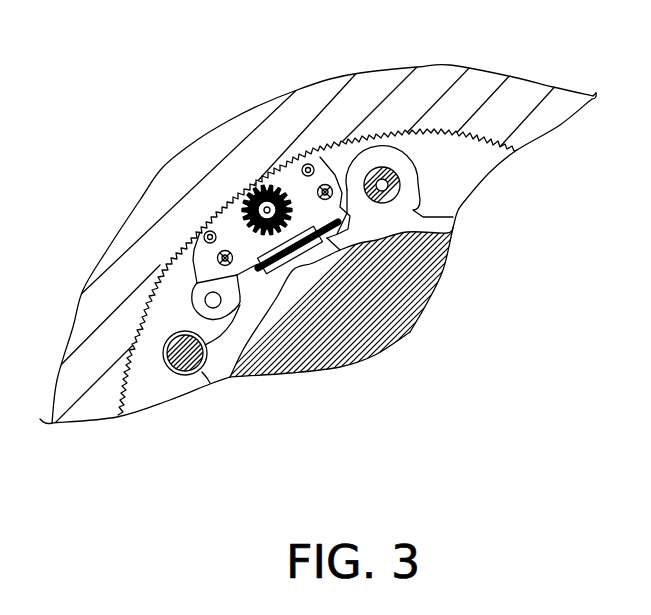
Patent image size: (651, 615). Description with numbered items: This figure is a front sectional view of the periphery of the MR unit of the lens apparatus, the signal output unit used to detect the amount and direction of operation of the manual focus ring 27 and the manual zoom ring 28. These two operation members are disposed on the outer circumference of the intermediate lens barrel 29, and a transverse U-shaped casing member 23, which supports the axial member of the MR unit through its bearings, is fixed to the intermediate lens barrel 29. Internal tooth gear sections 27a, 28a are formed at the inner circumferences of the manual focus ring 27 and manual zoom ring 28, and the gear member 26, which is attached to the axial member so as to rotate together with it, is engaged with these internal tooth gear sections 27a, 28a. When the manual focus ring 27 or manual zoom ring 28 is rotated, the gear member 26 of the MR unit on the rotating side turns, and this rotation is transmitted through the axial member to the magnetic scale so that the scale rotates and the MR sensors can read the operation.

The casing member 23 is at (197, 290).
The gear member 26 is at (252, 208).
The manual focus ring 27 is at (318, 225).
The manual zoom ring 28 is at (318, 225).
The internal tooth gear section 27a is at (357, 272).
The internal tooth gear section 28a is at (463, 138).
The intermediate lens barrel 29 is at (453, 202).